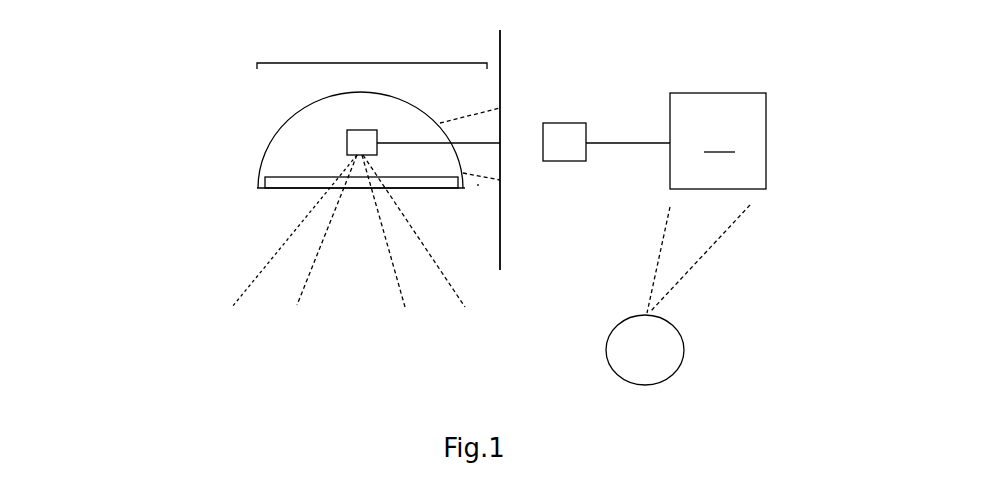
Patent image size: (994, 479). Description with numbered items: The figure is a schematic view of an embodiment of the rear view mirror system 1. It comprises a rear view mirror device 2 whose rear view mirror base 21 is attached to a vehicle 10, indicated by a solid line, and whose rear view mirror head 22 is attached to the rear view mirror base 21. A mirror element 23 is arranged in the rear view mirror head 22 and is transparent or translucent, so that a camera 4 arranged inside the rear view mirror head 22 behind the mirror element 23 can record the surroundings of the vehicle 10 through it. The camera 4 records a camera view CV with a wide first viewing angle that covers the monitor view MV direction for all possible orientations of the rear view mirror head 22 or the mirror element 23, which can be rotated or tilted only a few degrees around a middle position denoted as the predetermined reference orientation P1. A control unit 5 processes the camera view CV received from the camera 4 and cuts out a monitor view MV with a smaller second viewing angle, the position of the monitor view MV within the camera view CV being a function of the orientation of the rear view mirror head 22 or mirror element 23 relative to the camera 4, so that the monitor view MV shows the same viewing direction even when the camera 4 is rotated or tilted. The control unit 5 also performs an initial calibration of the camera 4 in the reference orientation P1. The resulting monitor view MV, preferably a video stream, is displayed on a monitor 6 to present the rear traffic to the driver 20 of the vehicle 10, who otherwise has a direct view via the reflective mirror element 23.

The rear view mirror system 1 is at (124, 141).
The rear view mirror device 2 is at (373, 63).
The camera 4 is at (343, 143).
The control unit 5 is at (564, 120).
The monitor 6 is at (718, 90).
The vehicle 10 is at (508, 207).
The driver 20 is at (678, 295).
The rear view mirror base 21 is at (478, 188).
The rear view mirror head 22 is at (268, 122).
The mirror element 23 is at (290, 194).
The camera view CV is at (243, 288).
The monitor view MV is at (332, 230).
The predetermined reference orientation P1 is at (374, 239).